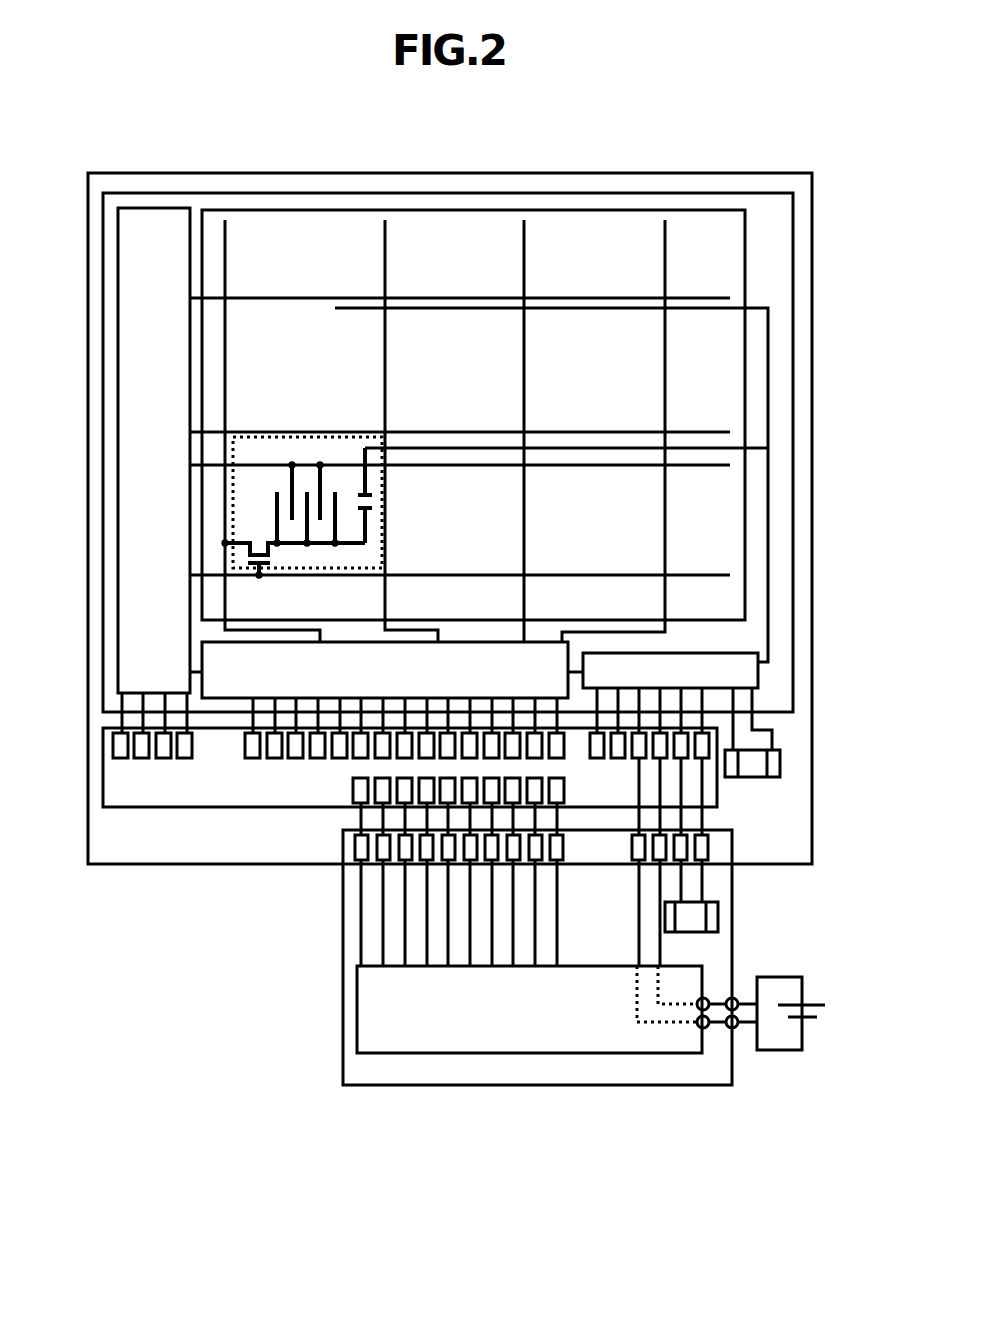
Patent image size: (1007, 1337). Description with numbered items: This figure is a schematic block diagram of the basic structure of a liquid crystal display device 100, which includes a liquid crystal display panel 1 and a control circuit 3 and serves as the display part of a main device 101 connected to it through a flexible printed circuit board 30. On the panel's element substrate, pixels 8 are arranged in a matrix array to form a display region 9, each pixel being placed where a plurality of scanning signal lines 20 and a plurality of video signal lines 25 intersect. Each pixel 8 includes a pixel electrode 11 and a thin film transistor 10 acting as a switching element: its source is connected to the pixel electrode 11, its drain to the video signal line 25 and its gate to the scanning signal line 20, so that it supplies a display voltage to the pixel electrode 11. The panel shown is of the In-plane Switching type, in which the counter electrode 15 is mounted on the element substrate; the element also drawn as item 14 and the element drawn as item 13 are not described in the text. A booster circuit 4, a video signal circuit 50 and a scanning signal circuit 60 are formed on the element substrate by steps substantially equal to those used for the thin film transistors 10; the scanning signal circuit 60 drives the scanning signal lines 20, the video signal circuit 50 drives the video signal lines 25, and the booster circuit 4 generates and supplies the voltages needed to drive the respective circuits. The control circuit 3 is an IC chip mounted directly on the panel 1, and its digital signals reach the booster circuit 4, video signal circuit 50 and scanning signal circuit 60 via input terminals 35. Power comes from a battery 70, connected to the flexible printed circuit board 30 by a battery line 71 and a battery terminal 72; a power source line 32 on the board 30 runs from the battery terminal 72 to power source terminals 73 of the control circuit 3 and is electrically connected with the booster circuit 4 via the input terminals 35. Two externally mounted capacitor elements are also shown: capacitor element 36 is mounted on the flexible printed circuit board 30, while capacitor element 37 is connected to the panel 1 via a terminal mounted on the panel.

The liquid crystal display device 100 is at (98, 868).
The liquid crystal display panel 1 is at (453, 195).
The display region 9 is at (549, 220).
The scanning signal circuit 60 is at (145, 232).
The scanning signal line 20 is at (285, 300).
The video signal line 25 is at (227, 346).
The common electrode wiring 14 is at (765, 517).
The pixel 8 is at (345, 437).
The counter electrode 15 is at (292, 485).
The storage capacitor 13 is at (367, 500).
The pixel electrode 11 is at (343, 527).
The thin film transistor 10 is at (272, 555).
The video signal circuit 50 is at (222, 695).
The booster circuit 4 is at (710, 680).
The control circuit 3 is at (308, 797).
The input terminals 35 is at (295, 747).
The capacitor element 37 is at (750, 762).
The flexible printed circuit board 30 is at (522, 1065).
The capacitor element 36 is at (692, 913).
The main device 101 is at (365, 1013).
The power source line 32 is at (680, 1025).
The power source terminals 73 is at (705, 1028).
The battery terminal 72 is at (733, 1028).
The battery 70 is at (810, 1028).
The battery line 71 is at (773, 1050).